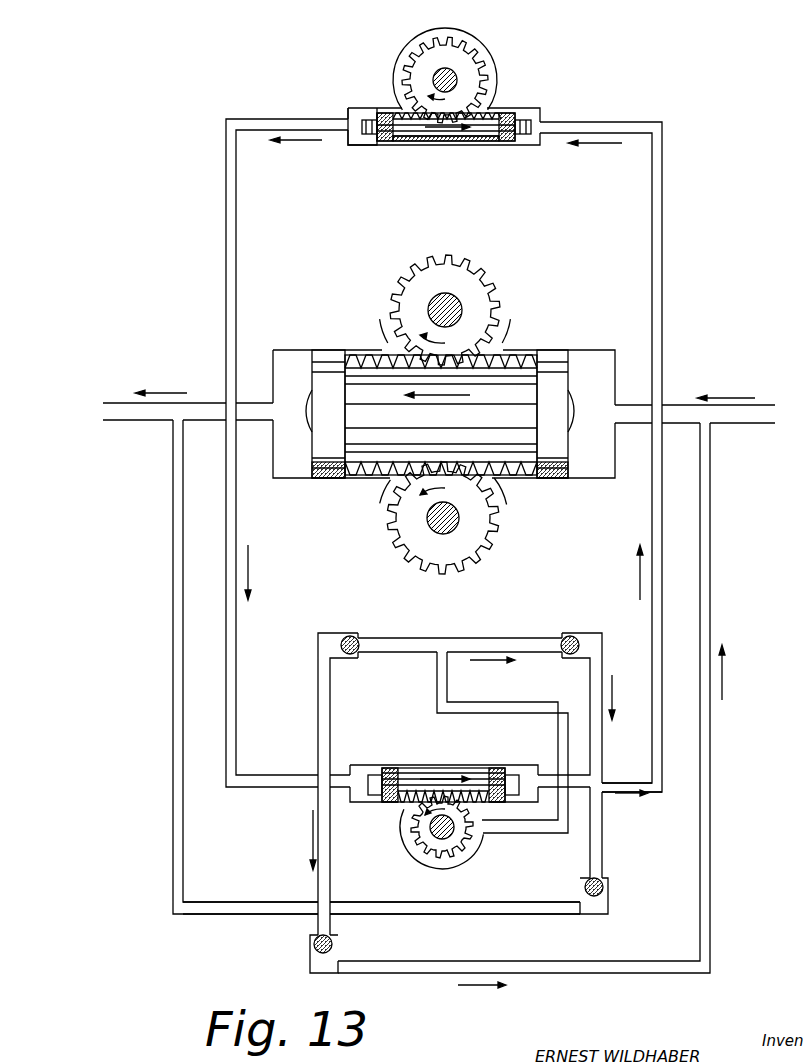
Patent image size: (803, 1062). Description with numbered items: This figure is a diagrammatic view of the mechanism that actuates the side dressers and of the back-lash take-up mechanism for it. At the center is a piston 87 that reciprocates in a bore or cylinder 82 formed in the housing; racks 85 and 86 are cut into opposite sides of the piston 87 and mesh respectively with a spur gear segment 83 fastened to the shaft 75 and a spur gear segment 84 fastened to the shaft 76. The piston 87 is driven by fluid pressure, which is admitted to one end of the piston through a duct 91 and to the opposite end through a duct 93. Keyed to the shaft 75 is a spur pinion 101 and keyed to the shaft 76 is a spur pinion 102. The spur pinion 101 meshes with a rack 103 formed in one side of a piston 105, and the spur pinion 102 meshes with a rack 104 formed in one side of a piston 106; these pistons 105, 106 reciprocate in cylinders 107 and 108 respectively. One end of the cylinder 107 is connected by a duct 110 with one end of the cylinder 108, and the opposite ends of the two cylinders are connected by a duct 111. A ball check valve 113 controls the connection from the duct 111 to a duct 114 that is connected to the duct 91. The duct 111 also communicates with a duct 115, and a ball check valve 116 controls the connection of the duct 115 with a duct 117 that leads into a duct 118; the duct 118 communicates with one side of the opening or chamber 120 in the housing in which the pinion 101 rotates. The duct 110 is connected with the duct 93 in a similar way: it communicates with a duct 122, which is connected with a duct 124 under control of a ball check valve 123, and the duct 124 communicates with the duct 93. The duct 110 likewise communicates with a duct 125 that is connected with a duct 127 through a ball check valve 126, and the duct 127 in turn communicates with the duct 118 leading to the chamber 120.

The shaft 75 is at (428, 525).
The shaft 76 is at (440, 77).
The bore or cylinder 82 is at (582, 360).
The spur gear segment 83 is at (478, 535).
The spur gear segment 84 is at (467, 288).
The rack 85 is at (367, 477).
The rack 86 is at (372, 358).
The piston 87 is at (510, 460).
The duct 91 is at (768, 410).
The duct 93 is at (118, 410).
The spur pinion 101 is at (460, 855).
The spur pinion 102 is at (463, 63).
The rack 103 is at (407, 798).
The rack 104 is at (410, 110).
The piston 105 is at (463, 772).
The piston 106 is at (482, 128).
The bore or cylinder 107 is at (517, 772).
The bore or cylinder 108 is at (523, 117).
The duct 110 is at (648, 785).
The duct 111 is at (228, 206).
The ball check valve 113 is at (313, 945).
The duct 114 is at (653, 968).
The duct 115 is at (318, 690).
The ball check valve 116 is at (350, 635).
The duct 117 is at (393, 642).
The duct 118 is at (507, 708).
The opening or chamber 120 is at (482, 847).
The duct 122 is at (601, 832).
The ball check valve 123 is at (604, 887).
The duct 124 is at (460, 918).
The duct 125 is at (598, 670).
The ball check valve 126 is at (570, 635).
The duct 127 is at (486, 642).